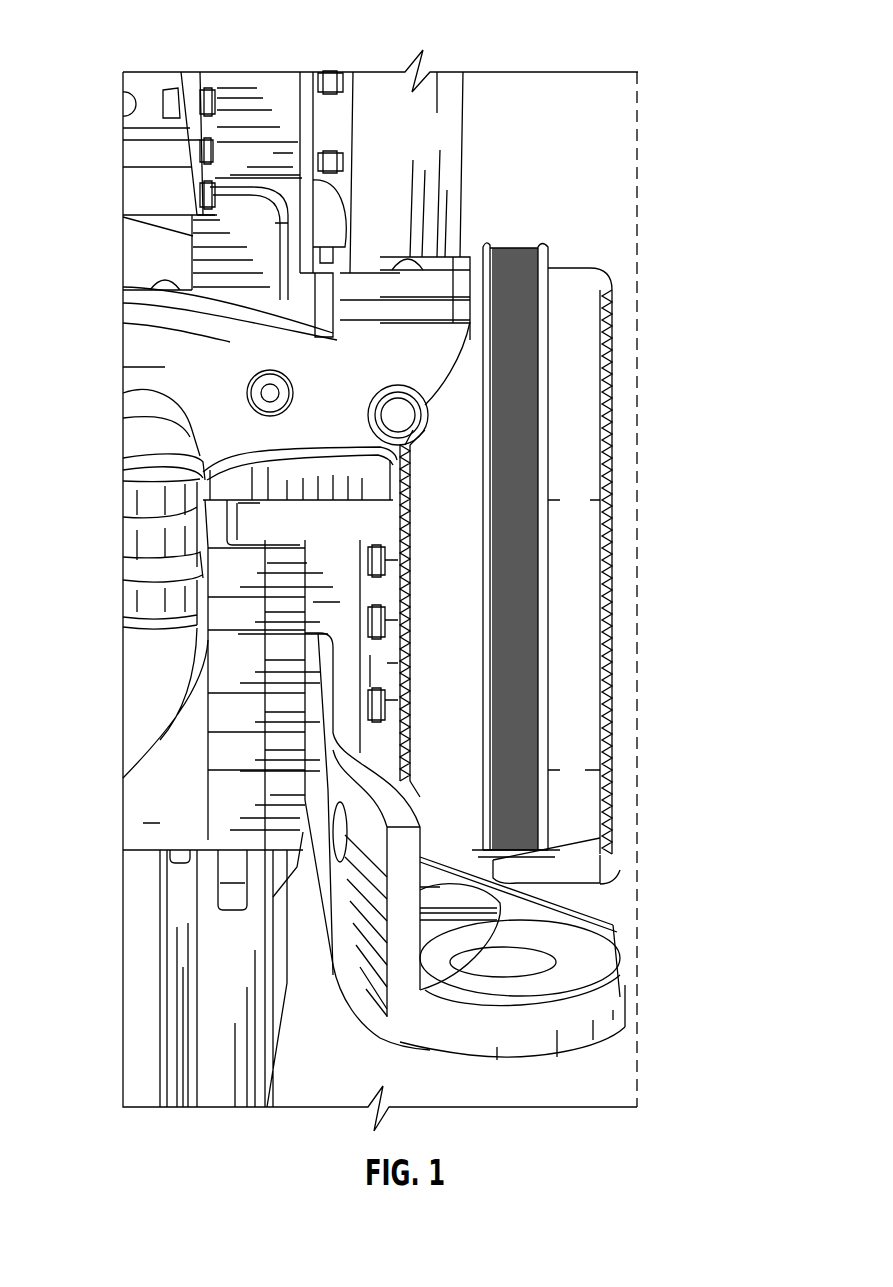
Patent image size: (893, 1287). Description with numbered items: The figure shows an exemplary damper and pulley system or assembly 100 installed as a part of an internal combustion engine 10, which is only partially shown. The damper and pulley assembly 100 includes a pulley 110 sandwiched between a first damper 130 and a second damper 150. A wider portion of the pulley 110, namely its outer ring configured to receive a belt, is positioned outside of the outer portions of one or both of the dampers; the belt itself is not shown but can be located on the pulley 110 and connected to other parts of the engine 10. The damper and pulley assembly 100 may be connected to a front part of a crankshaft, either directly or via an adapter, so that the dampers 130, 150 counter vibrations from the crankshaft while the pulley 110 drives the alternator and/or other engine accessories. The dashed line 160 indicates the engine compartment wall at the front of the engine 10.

The internal combustion engine 10 is at (97, 838).
The damper and pulley assembly 100 is at (420, 990).
The pulley 110 is at (520, 243).
The first damper 130 is at (460, 483).
The second damper 150 is at (585, 525).
The engine compartment wall 160 is at (637, 757).